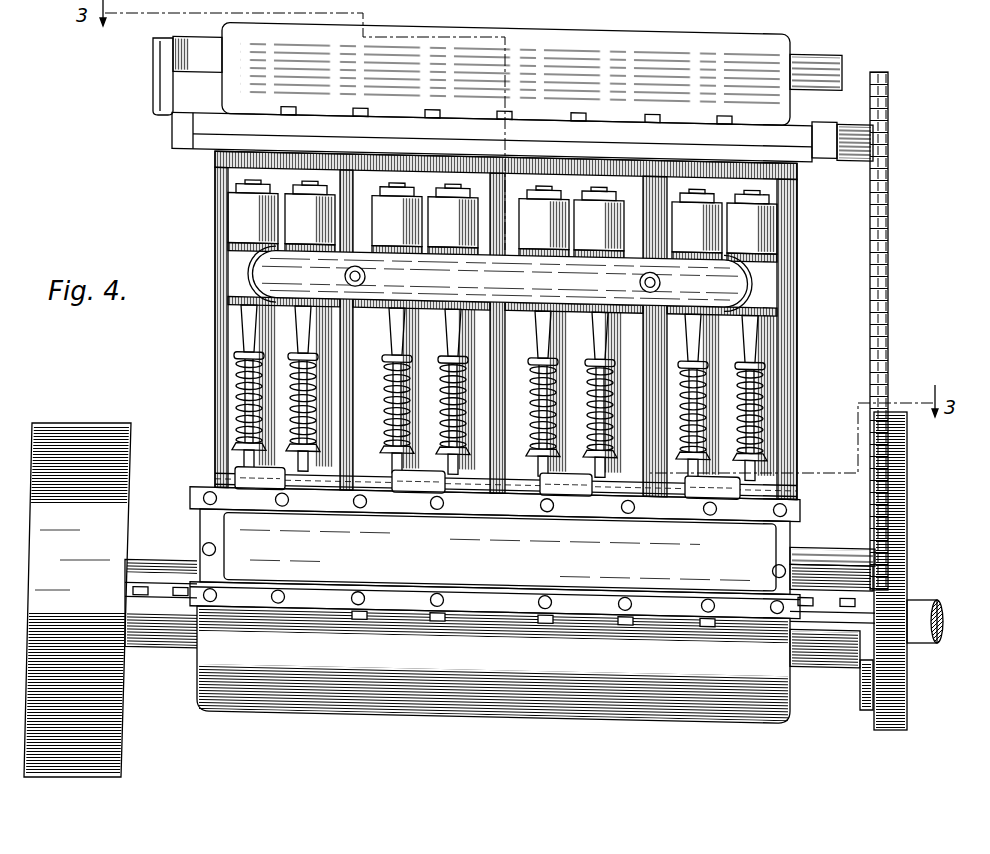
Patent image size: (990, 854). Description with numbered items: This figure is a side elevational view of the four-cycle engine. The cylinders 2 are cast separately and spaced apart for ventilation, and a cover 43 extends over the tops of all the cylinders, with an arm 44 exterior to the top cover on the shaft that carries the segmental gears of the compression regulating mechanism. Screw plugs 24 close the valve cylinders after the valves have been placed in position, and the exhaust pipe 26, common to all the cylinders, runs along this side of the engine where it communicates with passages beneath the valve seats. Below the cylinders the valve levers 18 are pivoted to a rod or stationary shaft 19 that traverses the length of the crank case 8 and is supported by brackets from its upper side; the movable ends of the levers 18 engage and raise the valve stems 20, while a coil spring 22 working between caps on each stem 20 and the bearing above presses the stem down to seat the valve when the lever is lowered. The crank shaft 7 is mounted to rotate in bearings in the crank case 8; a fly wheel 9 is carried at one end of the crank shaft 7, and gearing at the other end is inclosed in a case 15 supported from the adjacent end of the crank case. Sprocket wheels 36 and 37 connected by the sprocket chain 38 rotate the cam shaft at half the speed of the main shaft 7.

The cylinder 2 is at (226, 346).
The crank shaft 7 is at (928, 617).
The crank case 8 is at (375, 680).
The fly wheel 9 is at (113, 672).
The case 15 is at (907, 688).
The valve lever 18 is at (268, 490).
The rod or stationary shaft 19 is at (617, 492).
The valve stem 20 is at (290, 412).
The coil spring 22 is at (290, 380).
The screw plug 24 is at (312, 187).
The exhaust pipe 26 is at (500, 278).
The sprocket wheel 36 is at (873, 126).
The sprocket wheel 37 is at (866, 660).
The sprocket chain 38 is at (886, 258).
The cover 43 is at (507, 73).
The arm 44 is at (156, 77).